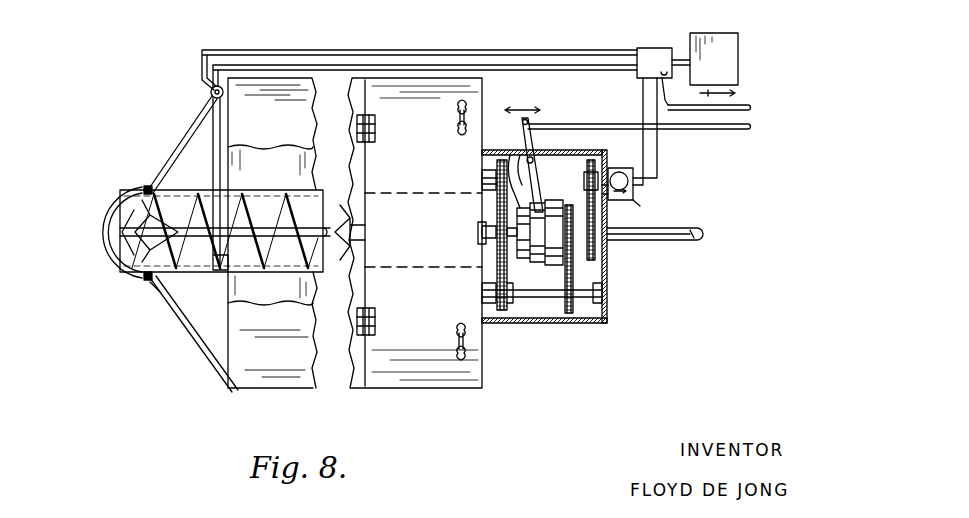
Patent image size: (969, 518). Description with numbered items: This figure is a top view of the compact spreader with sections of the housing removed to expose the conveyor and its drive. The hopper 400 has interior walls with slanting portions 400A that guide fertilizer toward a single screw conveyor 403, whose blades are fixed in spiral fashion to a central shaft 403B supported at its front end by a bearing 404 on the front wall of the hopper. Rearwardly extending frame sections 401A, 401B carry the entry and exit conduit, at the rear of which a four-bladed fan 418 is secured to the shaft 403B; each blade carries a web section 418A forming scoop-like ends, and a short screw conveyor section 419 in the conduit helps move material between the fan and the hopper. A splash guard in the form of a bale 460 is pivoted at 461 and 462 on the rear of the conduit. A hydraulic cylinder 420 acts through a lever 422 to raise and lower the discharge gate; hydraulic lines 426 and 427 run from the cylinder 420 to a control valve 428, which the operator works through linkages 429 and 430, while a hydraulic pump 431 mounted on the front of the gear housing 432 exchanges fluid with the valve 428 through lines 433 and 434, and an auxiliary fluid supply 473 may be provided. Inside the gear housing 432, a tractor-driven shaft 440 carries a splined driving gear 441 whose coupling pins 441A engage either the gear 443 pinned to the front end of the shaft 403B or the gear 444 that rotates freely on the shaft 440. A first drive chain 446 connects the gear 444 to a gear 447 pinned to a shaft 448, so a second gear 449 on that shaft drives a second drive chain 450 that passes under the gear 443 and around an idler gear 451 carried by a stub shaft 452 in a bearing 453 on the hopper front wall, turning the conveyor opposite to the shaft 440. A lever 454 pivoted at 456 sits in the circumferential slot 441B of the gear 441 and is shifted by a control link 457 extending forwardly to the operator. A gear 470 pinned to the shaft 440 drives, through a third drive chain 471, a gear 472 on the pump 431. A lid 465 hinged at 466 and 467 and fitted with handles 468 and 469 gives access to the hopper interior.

The hopper 400 is at (284, 360).
The slanting portions 400A is at (292, 178).
The rearwardly extending frame section 401A is at (178, 124).
The rearwardly extending frame section 401B is at (204, 345).
The screw conveyor 403 is at (302, 210).
The central shaft 403B is at (210, 270).
The bearing 404 is at (482, 233).
The fan 418 is at (144, 278).
The web section 418A is at (135, 232).
The short screw conveyor section 419 is at (148, 186).
The cylinder 420 is at (210, 92).
The lever 422 is at (213, 160).
The hydraulic line 426 is at (275, 62).
The hydraulic line 427 is at (212, 37).
The control valve 428 is at (650, 48).
The linkage 429 is at (668, 92).
The control link 430 is at (705, 108).
The hydraulic pump 431 is at (626, 205).
The gear housing 432 is at (607, 270).
The line 433 is at (643, 100).
The line 434 is at (657, 150).
The drive shaft 440 is at (692, 228).
The driving gear 441 is at (530, 262).
The coupling pins 441A is at (512, 152).
The central circumferential slot 441B is at (506, 312).
The gear 443 is at (497, 245).
The gear 444 is at (583, 205).
The first drive chain 446 is at (575, 315).
The gear 447 is at (592, 312).
The shaft 448 is at (607, 306).
The second gear 449 is at (505, 312).
The second drive chain 450 is at (497, 292).
The idler gear 451 is at (482, 181).
The stub shaft 452 is at (478, 190).
The bearing 453 is at (482, 180).
The lever 454 is at (532, 124).
The pivot 456 is at (570, 170).
The control link 457 is at (745, 132).
The bale 460 is at (112, 252).
The pivot 461 is at (148, 285).
The pivot 462 is at (142, 190).
The lid 465 is at (434, 350).
The hinge 466 is at (376, 314).
The hinge 467 is at (378, 122).
The handle 468 is at (459, 118).
The handle 469 is at (460, 357).
The gear 470 is at (692, 236).
The third drive chain 471 is at (615, 200).
The gear 472 is at (604, 168).
The auxiliary fluid supply 473 is at (735, 42).